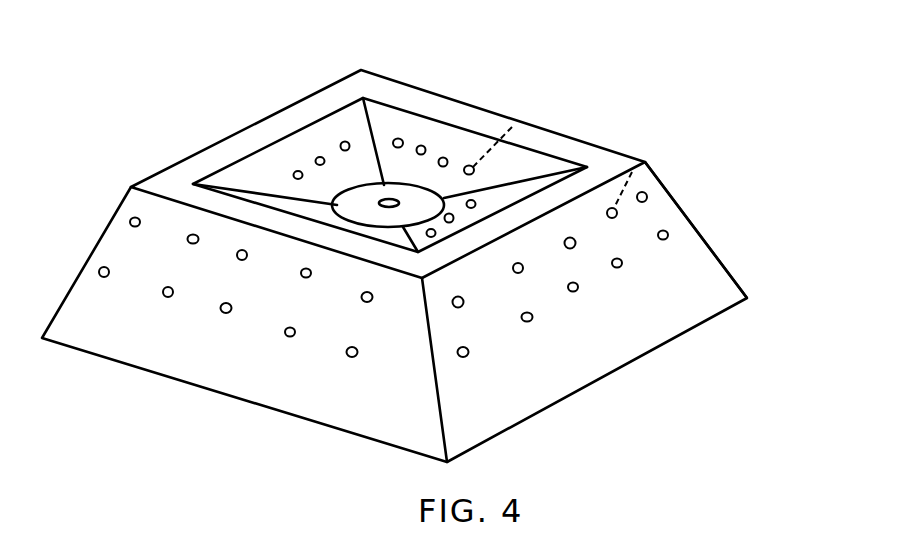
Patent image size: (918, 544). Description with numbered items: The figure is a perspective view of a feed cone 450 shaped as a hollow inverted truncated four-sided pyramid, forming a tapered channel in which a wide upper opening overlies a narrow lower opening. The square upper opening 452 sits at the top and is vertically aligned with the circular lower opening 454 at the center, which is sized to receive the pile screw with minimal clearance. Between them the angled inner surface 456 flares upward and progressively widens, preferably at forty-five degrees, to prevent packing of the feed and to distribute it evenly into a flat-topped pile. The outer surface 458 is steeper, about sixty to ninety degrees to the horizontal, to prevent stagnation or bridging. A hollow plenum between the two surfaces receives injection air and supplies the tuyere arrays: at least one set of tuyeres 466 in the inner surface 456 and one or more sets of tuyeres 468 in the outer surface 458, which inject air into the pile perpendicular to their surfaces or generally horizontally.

The feed cone 450 is at (97, 106).
The upper opening 452 is at (385, 124).
The lower opening 454 is at (355, 197).
The inner surface 456 is at (446, 133).
The outer surface 458 is at (665, 223).
The tuyeres 466 is at (563, 117).
The tuyeres 468 is at (684, 158).